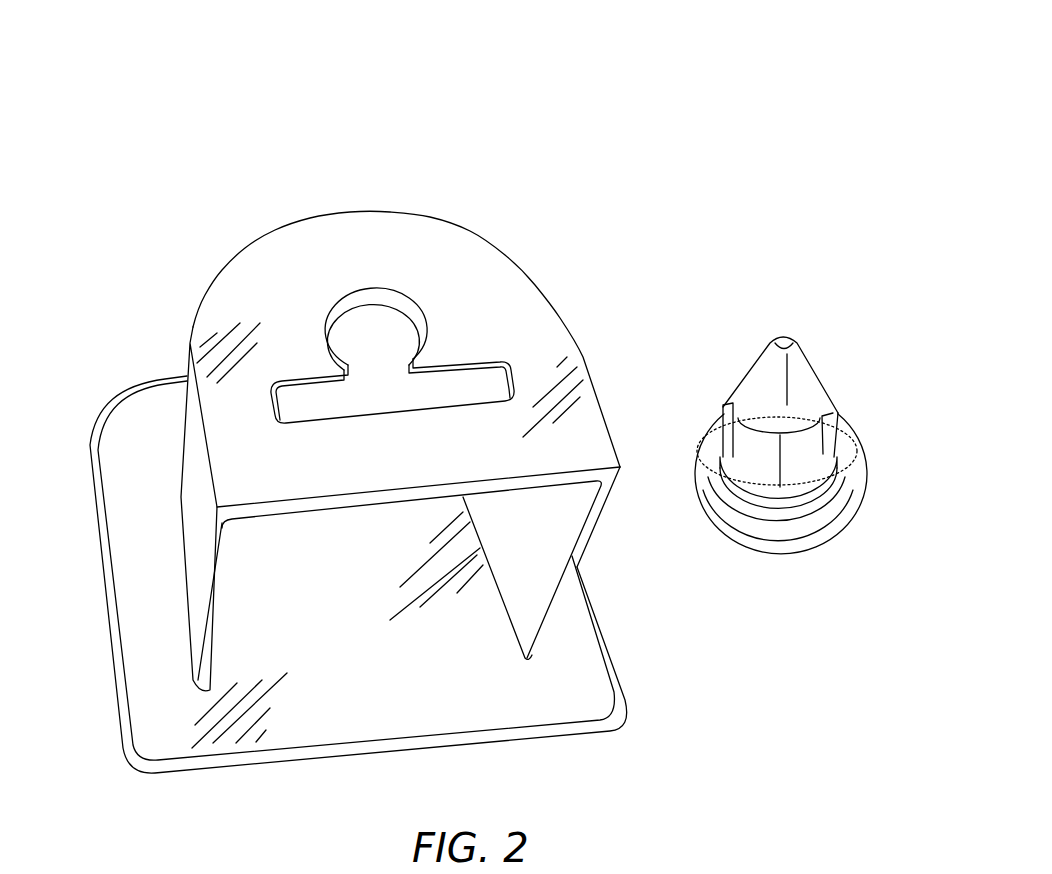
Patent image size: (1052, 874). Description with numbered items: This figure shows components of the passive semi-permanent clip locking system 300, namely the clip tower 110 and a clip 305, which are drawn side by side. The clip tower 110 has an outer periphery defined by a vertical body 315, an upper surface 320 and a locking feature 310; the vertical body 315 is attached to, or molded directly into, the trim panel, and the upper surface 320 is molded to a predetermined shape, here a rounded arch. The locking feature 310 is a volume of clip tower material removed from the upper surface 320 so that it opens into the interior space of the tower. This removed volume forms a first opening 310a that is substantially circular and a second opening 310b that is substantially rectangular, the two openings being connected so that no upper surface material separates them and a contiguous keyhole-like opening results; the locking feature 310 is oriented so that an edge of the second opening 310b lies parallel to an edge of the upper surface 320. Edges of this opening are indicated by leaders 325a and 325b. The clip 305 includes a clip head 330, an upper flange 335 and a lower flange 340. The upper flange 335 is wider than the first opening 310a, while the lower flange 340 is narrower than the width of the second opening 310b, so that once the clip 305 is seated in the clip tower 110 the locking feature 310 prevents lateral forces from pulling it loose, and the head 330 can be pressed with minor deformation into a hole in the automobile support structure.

The passive semi-permanent clip locking system 300 is at (148, 65).
The clip tower 110 is at (139, 253).
The clip 305 is at (808, 304).
The locking feature 310 is at (316, 279).
The first opening 310a is at (423, 317).
The second opening 310b is at (517, 373).
The vertical body 315 is at (188, 528).
The upper surface 320 is at (443, 240).
The upper edge of opening 325a is at (374, 292).
The lower edge of opening 325b is at (400, 417).
The clip head 330 is at (812, 388).
The upper flange 335 is at (840, 433).
The lower flange 340 is at (808, 542).